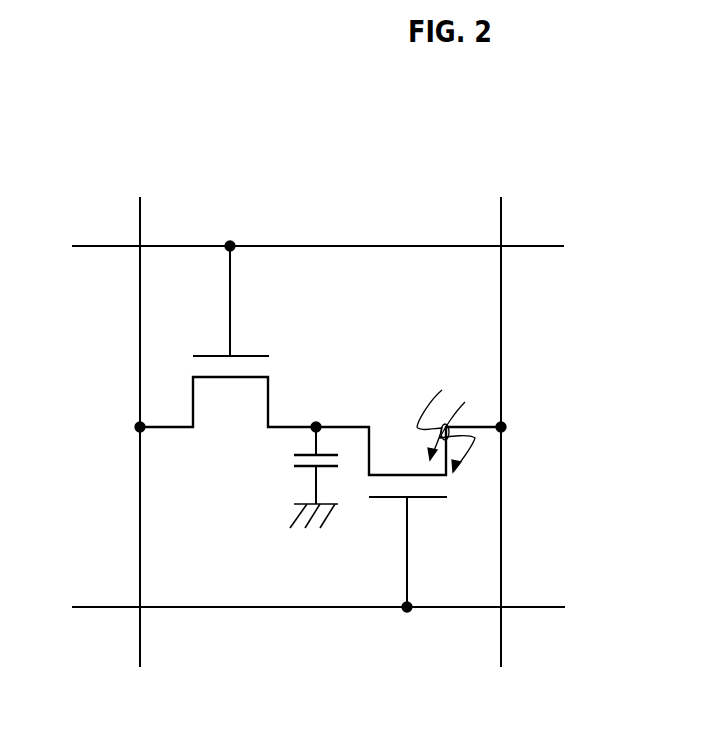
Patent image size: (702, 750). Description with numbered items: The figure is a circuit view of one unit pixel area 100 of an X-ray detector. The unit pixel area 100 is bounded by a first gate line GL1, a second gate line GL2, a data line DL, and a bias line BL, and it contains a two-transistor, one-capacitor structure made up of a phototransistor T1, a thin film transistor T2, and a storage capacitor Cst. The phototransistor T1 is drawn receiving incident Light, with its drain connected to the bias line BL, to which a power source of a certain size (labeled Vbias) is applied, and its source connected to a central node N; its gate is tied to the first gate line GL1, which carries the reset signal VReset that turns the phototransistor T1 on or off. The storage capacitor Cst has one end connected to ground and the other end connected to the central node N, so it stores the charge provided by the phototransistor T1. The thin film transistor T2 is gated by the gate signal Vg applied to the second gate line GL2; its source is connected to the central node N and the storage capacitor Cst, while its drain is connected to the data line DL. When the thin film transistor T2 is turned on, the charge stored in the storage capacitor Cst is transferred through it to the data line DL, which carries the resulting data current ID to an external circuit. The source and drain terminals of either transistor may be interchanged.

The unit pixel area 100 is at (337, 108).
The data line DL is at (140, 646).
The bias line BL is at (502, 643).
The first gate line GL1 is at (550, 602).
The second gate line GL2 is at (550, 243).
The phototransistor T1 is at (411, 517).
The thin film transistor T2 is at (225, 339).
The storage capacitor Cst is at (298, 477).
The central node N is at (315, 412).
The data current ID is at (140, 175).
The bias voltage Vbias is at (501, 175).
The gate signal Vg is at (51, 244).
The reset signal VReset is at (39, 604).
The incident light Light is at (447, 416).